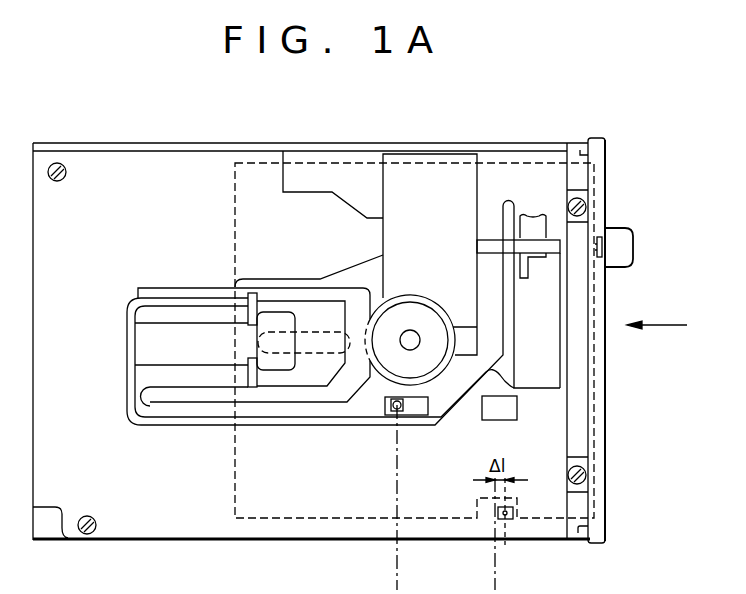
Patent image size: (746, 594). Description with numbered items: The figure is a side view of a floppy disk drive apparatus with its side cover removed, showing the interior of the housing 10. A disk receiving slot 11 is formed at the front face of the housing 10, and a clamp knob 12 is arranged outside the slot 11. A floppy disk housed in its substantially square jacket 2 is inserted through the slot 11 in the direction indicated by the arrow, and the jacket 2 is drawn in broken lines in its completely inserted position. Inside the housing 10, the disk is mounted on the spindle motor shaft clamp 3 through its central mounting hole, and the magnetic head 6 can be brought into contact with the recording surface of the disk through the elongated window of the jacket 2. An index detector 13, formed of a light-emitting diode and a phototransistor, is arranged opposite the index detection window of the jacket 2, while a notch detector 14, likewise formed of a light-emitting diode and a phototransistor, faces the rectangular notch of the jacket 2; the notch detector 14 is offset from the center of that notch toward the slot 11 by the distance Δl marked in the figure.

The housing 10 is at (192, 143).
The jacket 2 is at (235, 212).
The spindle motor shaft clamp 3 is at (423, 312).
The magnetic head 6 is at (280, 370).
The disk receiving slot 11 is at (605, 457).
The clamp knob 12 is at (620, 237).
The index detector 13 is at (399, 410).
The notch detector 14 is at (506, 516).